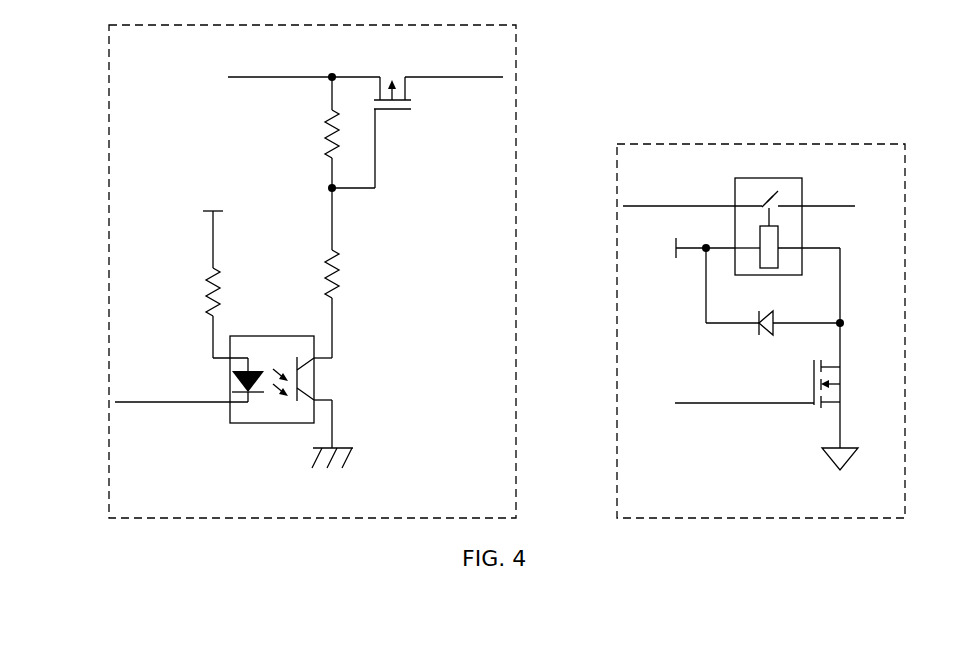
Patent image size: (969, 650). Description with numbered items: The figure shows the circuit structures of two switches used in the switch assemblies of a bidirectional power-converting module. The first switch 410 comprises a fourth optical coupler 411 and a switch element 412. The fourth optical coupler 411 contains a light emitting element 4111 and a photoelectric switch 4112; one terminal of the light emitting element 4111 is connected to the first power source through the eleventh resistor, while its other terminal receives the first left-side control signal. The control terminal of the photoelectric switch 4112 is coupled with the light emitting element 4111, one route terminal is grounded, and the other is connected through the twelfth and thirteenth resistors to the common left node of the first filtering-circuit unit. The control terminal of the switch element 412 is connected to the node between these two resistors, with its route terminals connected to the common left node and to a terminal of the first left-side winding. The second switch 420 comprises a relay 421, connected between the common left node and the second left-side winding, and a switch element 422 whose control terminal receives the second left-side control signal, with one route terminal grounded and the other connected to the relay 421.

The first switch 410 is at (107, 81).
The fourth optical coupler 411 is at (254, 430).
The light emitting element 4111 is at (256, 361).
The photoelectric switch 4112 is at (291, 354).
The switch element 412 is at (411, 114).
The second switch 420 is at (907, 186).
The relay 421 is at (811, 237).
The switch element 422 is at (845, 370).